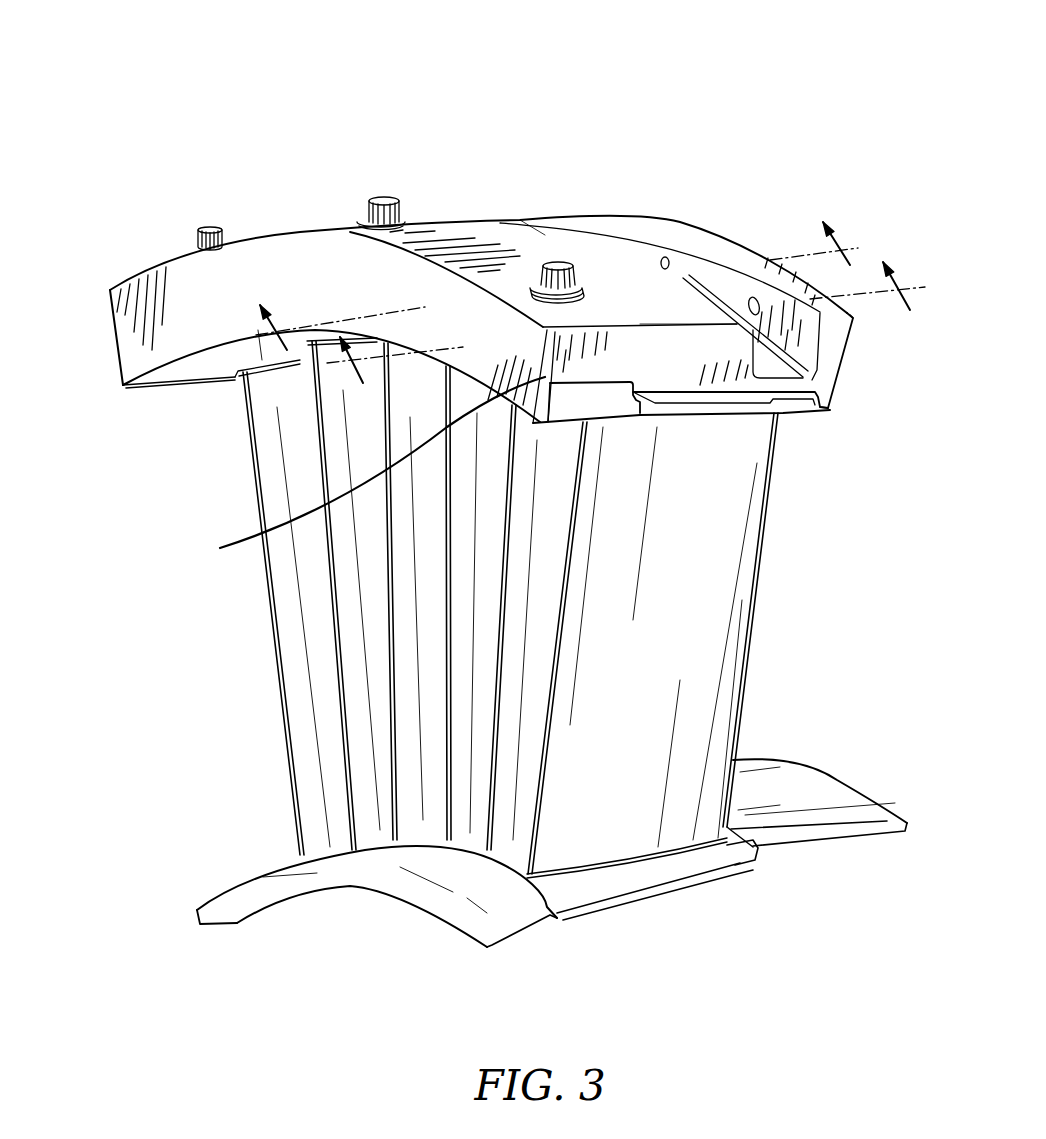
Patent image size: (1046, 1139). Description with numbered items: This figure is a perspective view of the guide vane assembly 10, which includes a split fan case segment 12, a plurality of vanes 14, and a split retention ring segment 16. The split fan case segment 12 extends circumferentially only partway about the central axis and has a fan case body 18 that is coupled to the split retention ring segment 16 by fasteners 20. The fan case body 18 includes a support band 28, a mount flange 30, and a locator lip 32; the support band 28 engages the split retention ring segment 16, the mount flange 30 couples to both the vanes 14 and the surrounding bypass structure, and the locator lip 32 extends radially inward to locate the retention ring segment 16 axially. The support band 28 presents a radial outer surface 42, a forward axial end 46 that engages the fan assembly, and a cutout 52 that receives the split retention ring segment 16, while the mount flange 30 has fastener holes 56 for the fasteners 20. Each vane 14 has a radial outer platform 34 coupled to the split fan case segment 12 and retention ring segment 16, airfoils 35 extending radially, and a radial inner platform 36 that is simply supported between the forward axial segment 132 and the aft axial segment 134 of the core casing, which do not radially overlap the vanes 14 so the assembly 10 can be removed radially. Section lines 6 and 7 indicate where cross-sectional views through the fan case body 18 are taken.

The guide vane assembly 10 is at (140, 108).
The split fan case segment 12 is at (496, 190).
The plurality of vanes 14 is at (214, 578).
The split retention ring segment 16 is at (602, 430).
The fan case body 18 is at (280, 226).
The fasteners 20 is at (206, 228).
The support band 28 is at (683, 320).
The mount flange 30 is at (818, 350).
The locator lip 32 is at (222, 548).
The radial outer platform 34 is at (793, 420).
The airfoils 35 is at (713, 592).
The radial inner platform 36 is at (717, 868).
The radial outer surface 42 is at (590, 250).
The forward axial end 46 is at (190, 338).
The cutout 52 is at (603, 380).
The fastener holes 56 is at (663, 256).
The forward axial segment 132 is at (860, 797).
The aft axial segment 134 is at (433, 897).
The section line 6- 6 is at (626, 322).
The section line 7- 7 is at (558, 288).